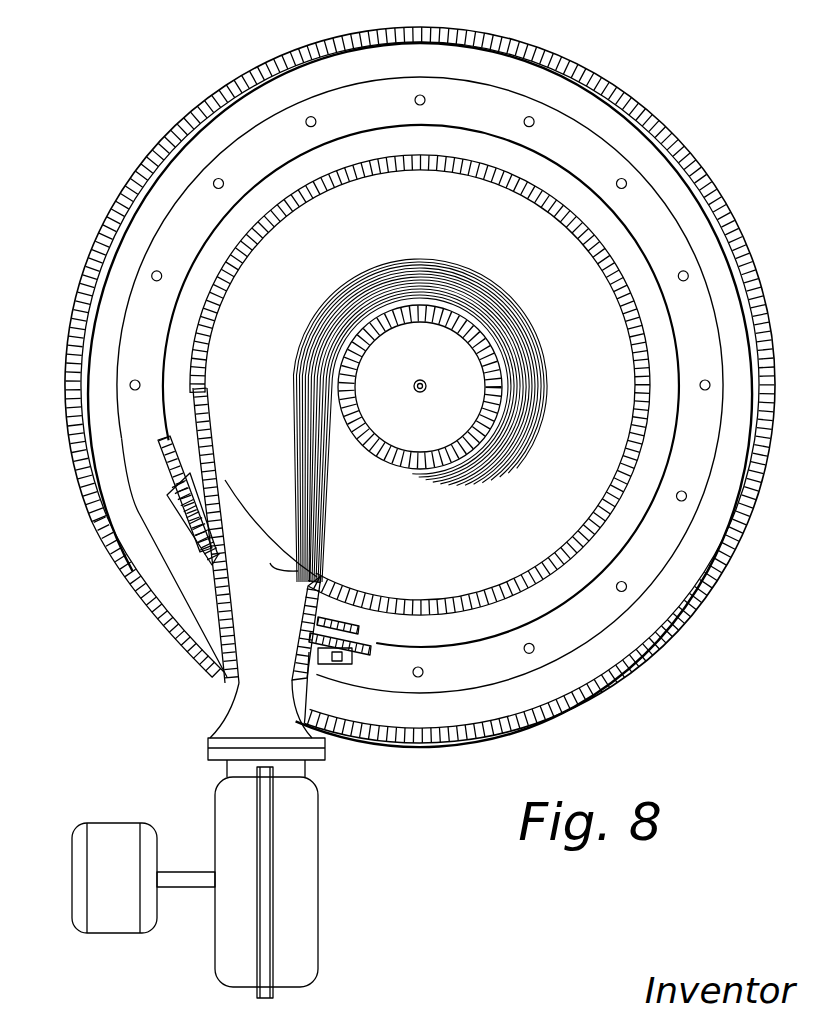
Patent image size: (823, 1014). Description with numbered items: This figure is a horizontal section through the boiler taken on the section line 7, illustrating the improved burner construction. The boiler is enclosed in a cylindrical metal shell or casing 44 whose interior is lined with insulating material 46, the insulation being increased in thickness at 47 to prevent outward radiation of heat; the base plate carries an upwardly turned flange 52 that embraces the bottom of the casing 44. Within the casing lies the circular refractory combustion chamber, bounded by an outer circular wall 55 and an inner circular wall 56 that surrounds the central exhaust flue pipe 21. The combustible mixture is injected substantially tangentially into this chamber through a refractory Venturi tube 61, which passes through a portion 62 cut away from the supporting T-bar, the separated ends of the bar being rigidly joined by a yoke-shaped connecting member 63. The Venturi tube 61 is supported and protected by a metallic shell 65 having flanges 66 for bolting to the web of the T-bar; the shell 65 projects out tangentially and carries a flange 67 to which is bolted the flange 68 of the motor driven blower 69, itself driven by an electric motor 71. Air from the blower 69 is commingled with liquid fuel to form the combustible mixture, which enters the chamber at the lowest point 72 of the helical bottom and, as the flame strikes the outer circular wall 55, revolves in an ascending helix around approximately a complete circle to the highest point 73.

The section line 7- 7 is at (62, 383).
The exhaust flue pipe 21 is at (362, 353).
The cylindrical metal shell or casing 44 is at (467, 741).
The insulating material 46 is at (523, 717).
The thickened insulation 47 is at (175, 512).
The upwardly turned flange 52 is at (342, 200).
The outer circular wall 55 is at (495, 170).
The inner circular wall 56 is at (480, 330).
The Venturi tube 61 is at (318, 564).
The cut away portion 62 is at (312, 680).
The yoke-shaped connecting member 63 is at (366, 649).
The metallic shell 65 is at (210, 668).
The flanges 66 is at (340, 660).
The flange 67 is at (320, 744).
The flange of the blower 68 is at (320, 755).
The motor driven blower 69 is at (302, 862).
The electric motor 71 is at (112, 905).
The lowest point of the helical bottom 72 is at (281, 415).
The highest point of the helical bottom 73 is at (372, 537).